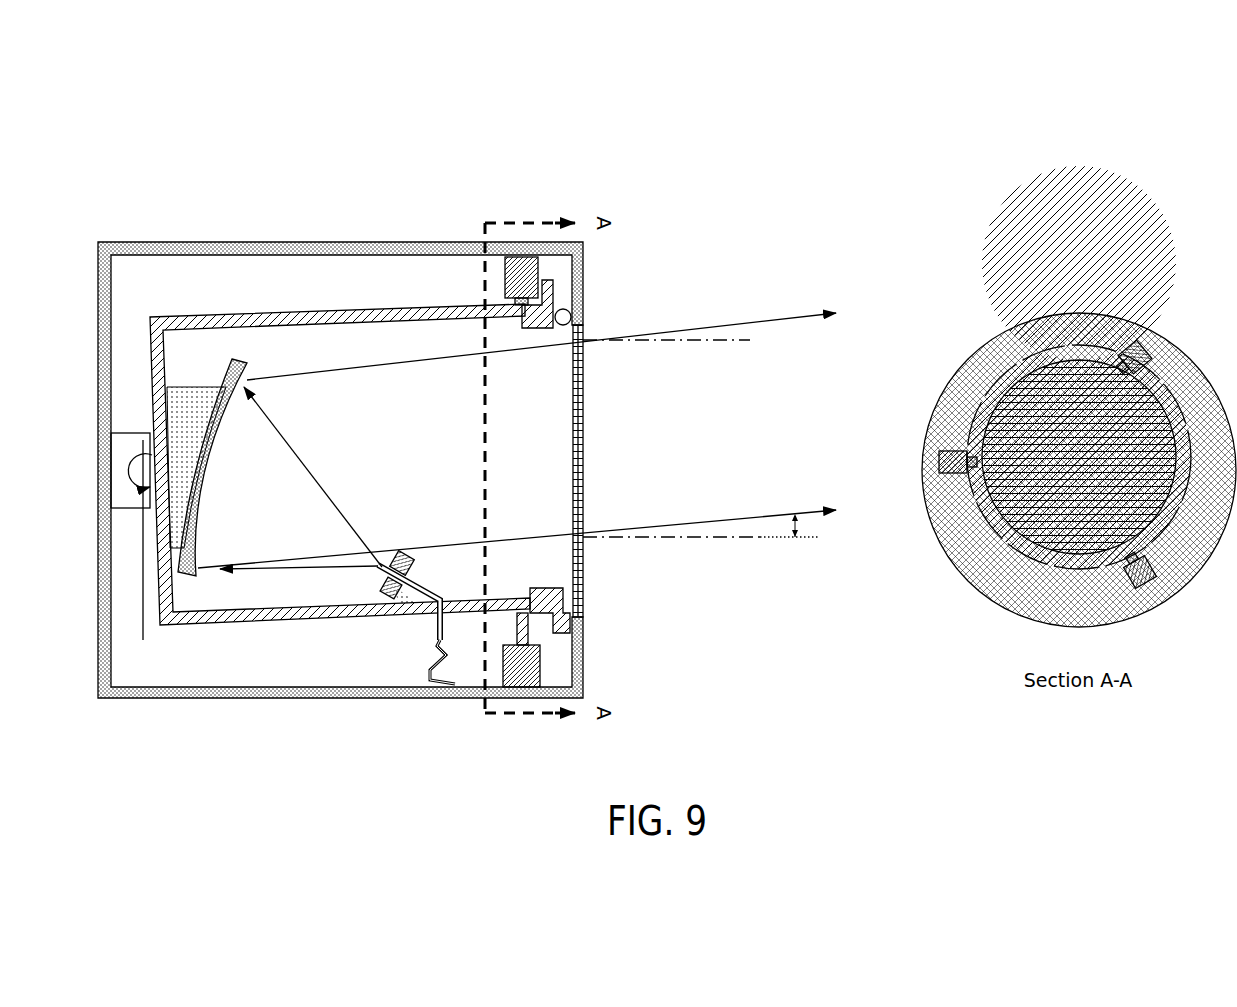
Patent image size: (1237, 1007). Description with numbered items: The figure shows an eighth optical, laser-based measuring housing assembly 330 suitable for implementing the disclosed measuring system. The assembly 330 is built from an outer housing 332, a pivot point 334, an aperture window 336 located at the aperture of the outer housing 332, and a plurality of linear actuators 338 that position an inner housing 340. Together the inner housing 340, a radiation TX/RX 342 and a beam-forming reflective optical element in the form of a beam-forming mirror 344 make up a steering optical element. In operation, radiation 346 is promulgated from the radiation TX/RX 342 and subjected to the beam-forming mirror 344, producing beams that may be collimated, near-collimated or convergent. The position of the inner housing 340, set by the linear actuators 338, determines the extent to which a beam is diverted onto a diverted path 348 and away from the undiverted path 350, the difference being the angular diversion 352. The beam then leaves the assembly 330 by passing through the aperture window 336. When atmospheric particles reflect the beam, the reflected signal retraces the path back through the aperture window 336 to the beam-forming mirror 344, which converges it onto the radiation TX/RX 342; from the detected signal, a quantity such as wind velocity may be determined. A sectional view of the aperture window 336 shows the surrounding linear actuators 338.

The housing assembly 330 is at (205, 150).
The outer housing 332 is at (318, 240).
The pivot point 334 is at (187, 553).
The aperture window 336 is at (586, 412).
The linear actuators 338 is at (1131, 342).
The inner housing 340 is at (320, 303).
The radiation TX/RX 342 is at (385, 630).
The beam-forming mirror 344 is at (213, 471).
The radiation 346 is at (318, 472).
The diverted path 348 is at (792, 308).
The undiverted path 350 is at (660, 333).
The angular diversion 352 is at (795, 555).